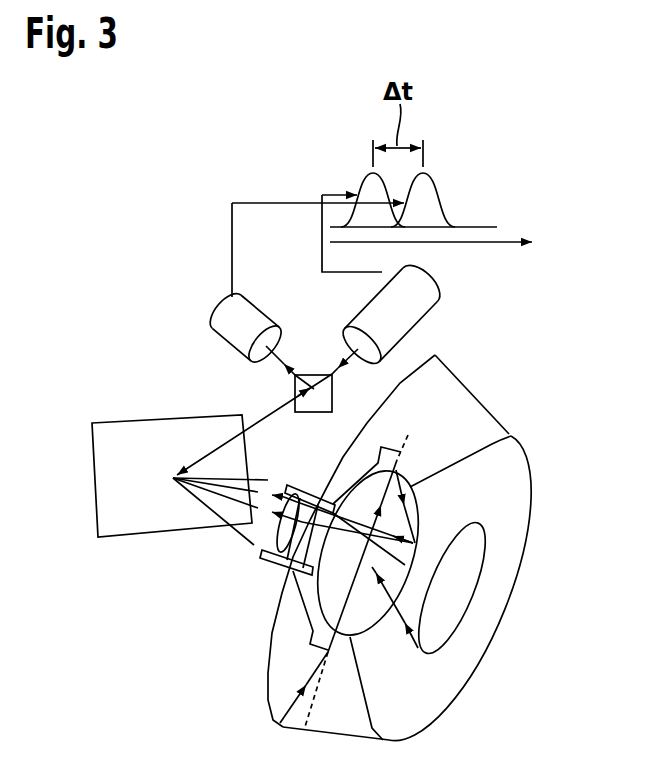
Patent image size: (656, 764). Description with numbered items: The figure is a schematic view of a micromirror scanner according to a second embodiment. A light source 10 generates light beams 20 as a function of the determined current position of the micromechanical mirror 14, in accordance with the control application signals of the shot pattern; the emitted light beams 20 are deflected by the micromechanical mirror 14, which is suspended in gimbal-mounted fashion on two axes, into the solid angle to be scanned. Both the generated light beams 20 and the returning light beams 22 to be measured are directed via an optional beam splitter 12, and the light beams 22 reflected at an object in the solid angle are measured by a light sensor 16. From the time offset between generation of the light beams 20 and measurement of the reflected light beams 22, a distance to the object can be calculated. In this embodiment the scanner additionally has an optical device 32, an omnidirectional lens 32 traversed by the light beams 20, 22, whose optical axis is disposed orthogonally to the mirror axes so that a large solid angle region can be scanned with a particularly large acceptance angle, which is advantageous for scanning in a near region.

The light source 10 is at (425, 293).
The beam splitter 12 is at (312, 404).
The micromechanical mirror 14 is at (128, 510).
The light sensor 16 is at (228, 312).
The light beams 20 is at (343, 350).
The reflected light beams 22 is at (290, 375).
The optical device 32 is at (287, 552).